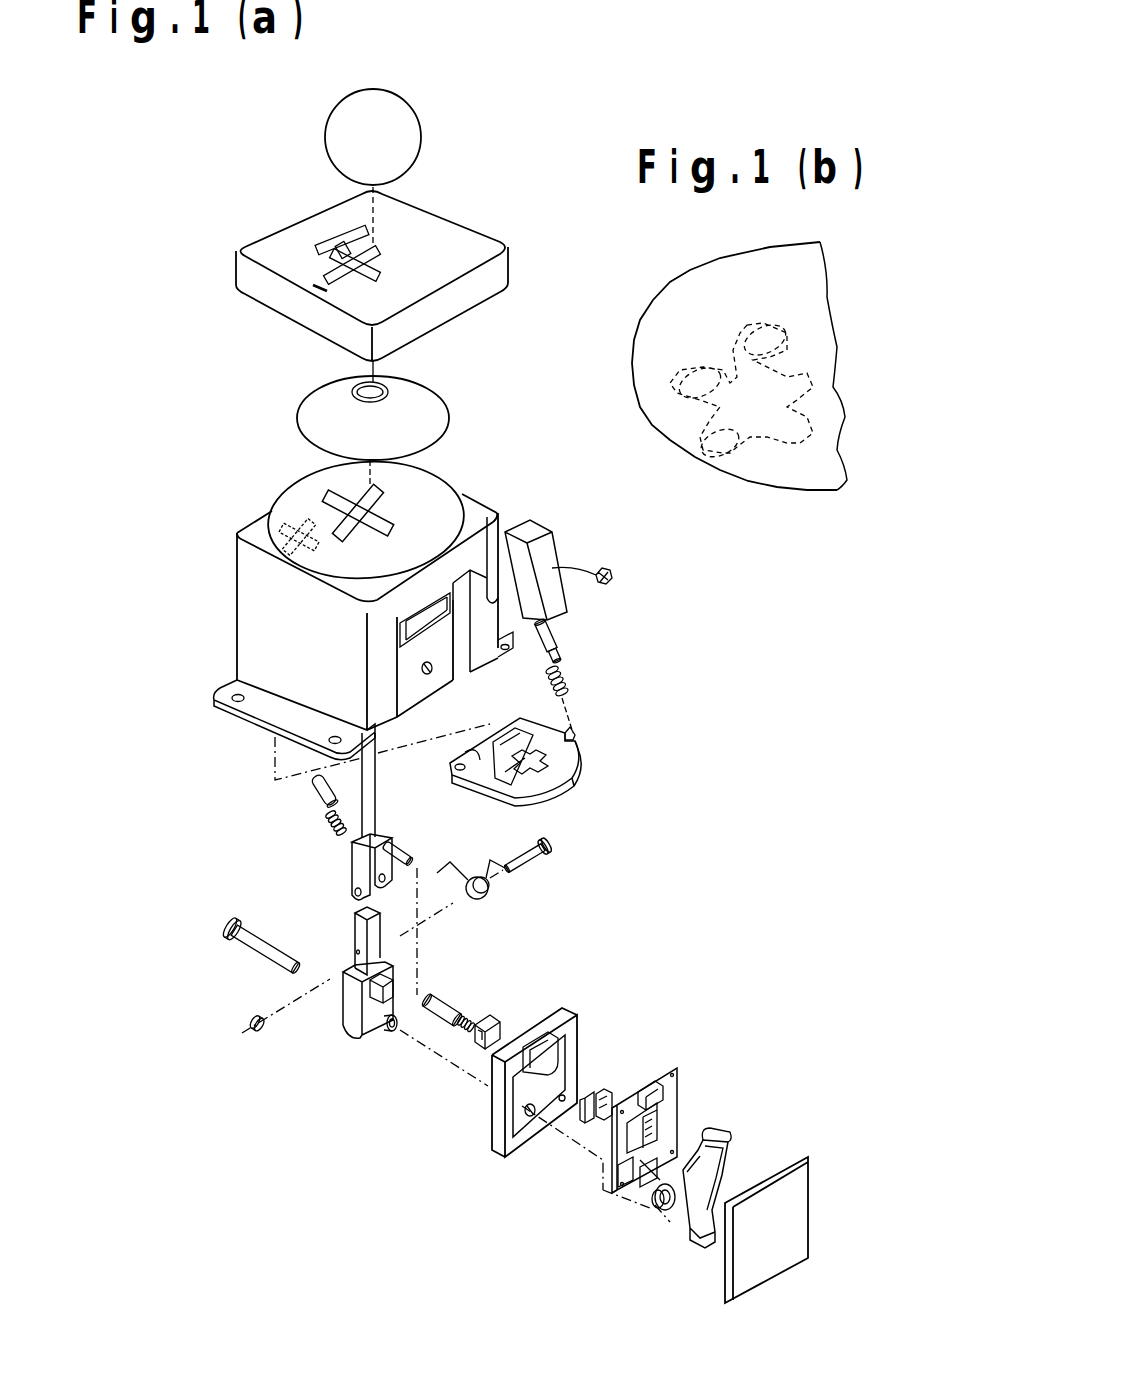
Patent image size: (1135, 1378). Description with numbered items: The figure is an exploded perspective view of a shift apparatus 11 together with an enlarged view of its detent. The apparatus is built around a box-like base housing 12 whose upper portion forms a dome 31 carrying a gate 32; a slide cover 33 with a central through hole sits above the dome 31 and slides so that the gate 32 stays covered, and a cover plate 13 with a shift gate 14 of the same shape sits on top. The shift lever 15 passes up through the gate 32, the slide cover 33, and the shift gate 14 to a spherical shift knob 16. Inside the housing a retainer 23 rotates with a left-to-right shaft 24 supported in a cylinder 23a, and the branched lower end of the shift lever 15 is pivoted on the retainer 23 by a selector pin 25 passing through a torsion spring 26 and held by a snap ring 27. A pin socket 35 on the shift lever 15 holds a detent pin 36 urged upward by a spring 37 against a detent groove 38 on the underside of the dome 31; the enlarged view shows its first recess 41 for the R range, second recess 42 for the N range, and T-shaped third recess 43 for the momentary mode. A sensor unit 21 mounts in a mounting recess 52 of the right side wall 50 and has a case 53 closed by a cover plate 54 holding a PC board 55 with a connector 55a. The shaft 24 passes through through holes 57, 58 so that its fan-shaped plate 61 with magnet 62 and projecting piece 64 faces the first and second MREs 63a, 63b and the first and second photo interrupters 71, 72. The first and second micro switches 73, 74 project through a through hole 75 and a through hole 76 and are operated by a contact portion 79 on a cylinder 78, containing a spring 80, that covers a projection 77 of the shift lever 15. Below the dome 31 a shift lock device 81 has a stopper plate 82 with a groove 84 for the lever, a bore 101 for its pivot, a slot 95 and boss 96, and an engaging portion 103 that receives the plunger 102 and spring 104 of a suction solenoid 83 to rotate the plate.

In FIG. 1A, the shift apparatus 11 is at (194, 183).
In FIG. 1A, the base housing 12 is at (222, 570).
In FIG. 1A, the cover plate 13 is at (240, 277).
In FIG. 1A, the shift gate 14 is at (338, 234).
In FIG. 1A, the shift lever 15 is at (372, 792).
In FIG. 1A, the shift knob 16 is at (328, 116).
In FIG. 1A, the sensor unit 21 is at (704, 1022).
In FIG. 1A, the retainer 23 is at (352, 1023).
In FIG. 1A, the cylinder 23a is at (383, 1033).
In FIG. 1A, the shaft 24 is at (245, 952).
In FIG. 1A, the selector pin 25 is at (533, 858).
In FIG. 1A, the torsion spring 26 is at (487, 900).
In FIG. 1A, the snap ring 27 is at (252, 1018).
In FIG. 1A, the dome 31 is at (432, 502).
In FIG. 1B, the dome 31 is at (715, 268).
In FIG. 1A, the gate 32 is at (340, 492).
In FIG. 1A, the slide cover 33 is at (313, 403).
In FIG. 1A, the pin socket 35 is at (350, 863).
In FIG. 1A, the detent pin 36 is at (315, 795).
In FIG. 1A, the spring 37 is at (330, 825).
In FIG. 1A, the detent groove 38 is at (281, 514).
In FIG. 1B, the detent groove 38 is at (710, 334).
In FIG. 1B, the first recess 41 is at (773, 327).
In FIG. 1B, the second recess 42 is at (663, 393).
In FIG. 1B, the third recess 43 is at (742, 442).
In FIG. 1A, the right side wall 50 is at (440, 665).
In FIG. 1A, the mounting recess 52 is at (490, 520).
In FIG. 1A, the case 53 is at (597, 998).
In FIG. 1A, the cover plate 54 is at (803, 1157).
In FIG. 1A, the PC board 55 is at (682, 1105).
In FIG. 1A, the connector 55a is at (613, 1190).
In FIG. 1A, the through hole 57 is at (427, 670).
In FIG. 1A, the through hole 58 is at (523, 1115).
In FIG. 1A, the plate 61 is at (722, 1177).
In FIG. 1A, the magnet 62 is at (668, 1210).
In FIG. 1A, the first magnetoresistance element 63a is at (627, 1188).
In FIG. 1A, the second magnetoresistance element 63b is at (658, 1122).
In FIG. 1A, the projecting piece 64 is at (712, 1131).
In FIG. 1A, the first photo interrupter 71 is at (680, 1073).
In FIG. 1A, the second photo interrupter 72 is at (650, 1083).
In FIG. 1A, the first micro switch 73 is at (607, 1097).
In FIG. 1A, the second micro switch 74 is at (592, 1097).
In FIG. 1A, the through hole 75 is at (547, 1033).
In FIG. 1A, the through hole 76 is at (398, 633).
In FIG. 1A, the projection 77 is at (390, 857).
In FIG. 1A, the cylinder 78 is at (442, 997).
In FIG. 1A, the contact portion 79 is at (490, 1023).
In FIG. 1A, the spring 80 is at (470, 1018).
In FIG. 1A, the shift lock device 81 is at (624, 747).
In FIG. 1A, the stopper plate 82 is at (557, 783).
In FIG. 1A, the suction solenoid 83 is at (560, 600).
In FIG. 1A, the groove 84 is at (553, 760).
In FIG. 1A, the slot 95 is at (507, 717).
In FIG. 1A, the projection 96 is at (512, 782).
In FIG. 1A, the bore 101 is at (458, 787).
In FIG. 1A, the plunger 102 is at (552, 637).
In FIG. 1A, the engaging portion 103 is at (590, 726).
In FIG. 1A, the spring 104 is at (568, 682).